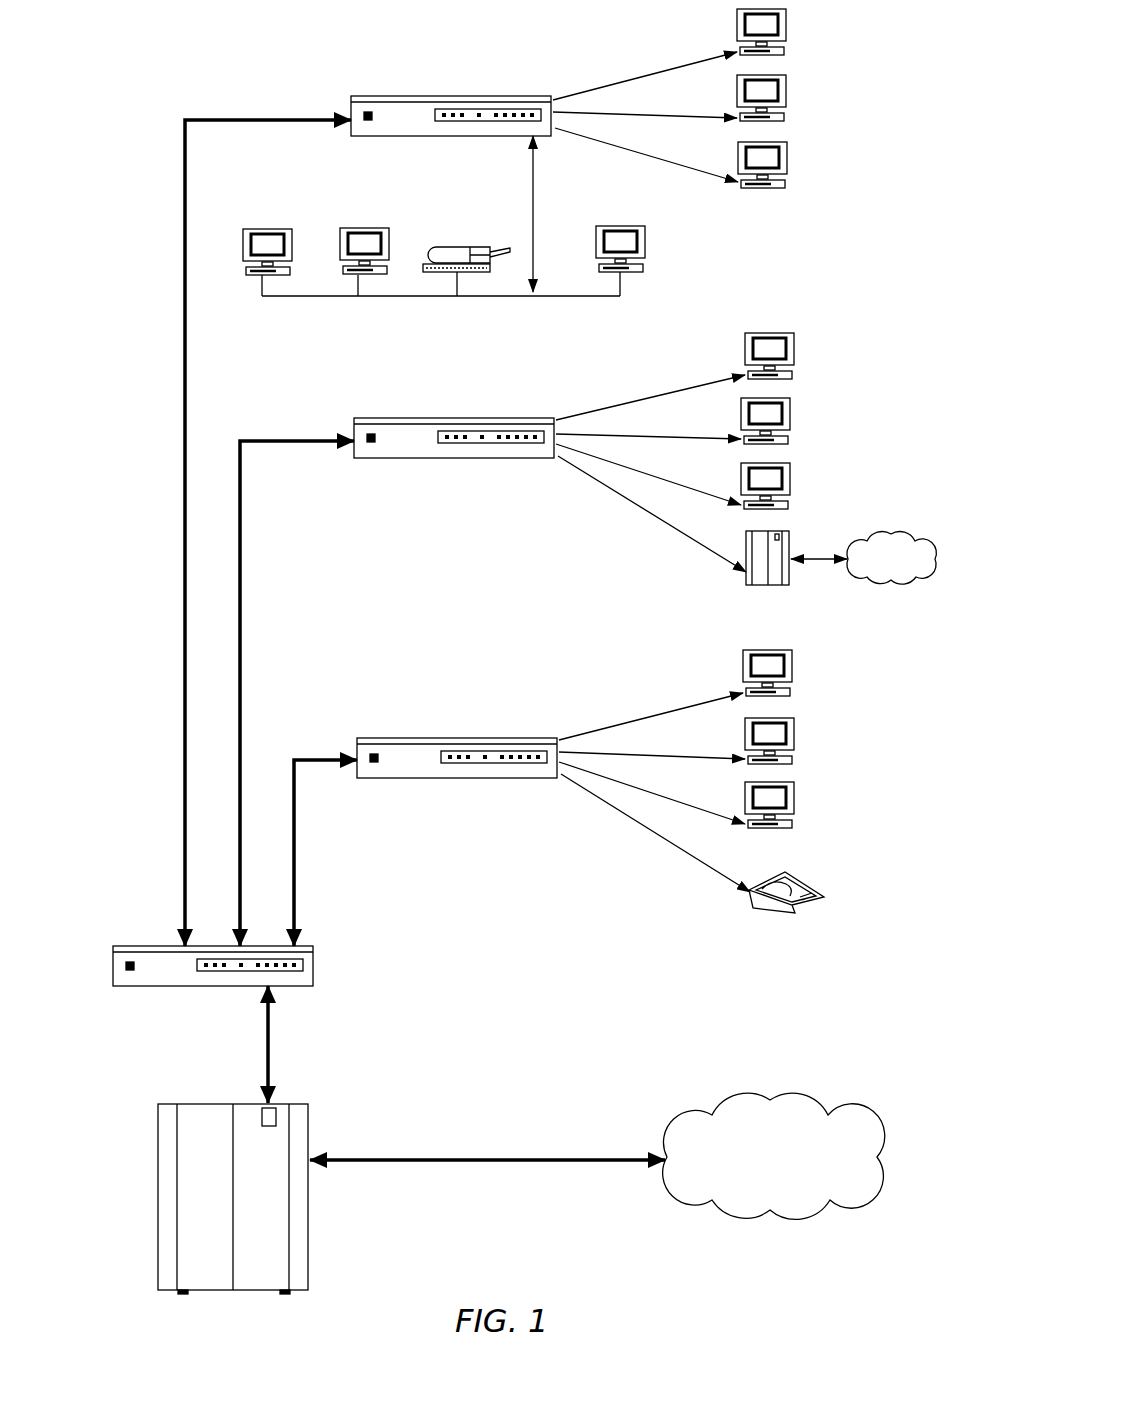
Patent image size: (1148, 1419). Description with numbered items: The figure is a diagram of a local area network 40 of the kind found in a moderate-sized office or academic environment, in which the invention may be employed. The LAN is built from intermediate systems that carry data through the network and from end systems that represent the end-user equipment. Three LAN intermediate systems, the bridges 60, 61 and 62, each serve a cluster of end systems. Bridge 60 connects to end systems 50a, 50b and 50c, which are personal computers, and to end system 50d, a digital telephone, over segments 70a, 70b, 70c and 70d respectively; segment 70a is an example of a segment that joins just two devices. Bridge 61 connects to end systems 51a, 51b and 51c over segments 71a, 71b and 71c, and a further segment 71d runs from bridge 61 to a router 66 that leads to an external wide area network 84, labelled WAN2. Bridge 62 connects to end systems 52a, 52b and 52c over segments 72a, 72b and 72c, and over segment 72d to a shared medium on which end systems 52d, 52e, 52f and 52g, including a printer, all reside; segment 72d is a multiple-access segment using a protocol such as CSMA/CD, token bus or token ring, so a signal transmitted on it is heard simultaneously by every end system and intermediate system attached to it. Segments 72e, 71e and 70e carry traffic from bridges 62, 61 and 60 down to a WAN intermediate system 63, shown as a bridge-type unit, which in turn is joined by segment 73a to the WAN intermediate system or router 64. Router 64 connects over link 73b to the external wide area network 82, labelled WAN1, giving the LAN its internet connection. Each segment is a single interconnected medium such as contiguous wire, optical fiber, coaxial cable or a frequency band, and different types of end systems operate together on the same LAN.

The local area network 40 is at (122, 503).
The end system 50a is at (796, 653).
The end system 50b is at (796, 742).
The end system 50c is at (797, 805).
The end system 50d is at (796, 879).
The end system 51a is at (796, 337).
The end system 51b is at (791, 407).
The end system 51c is at (792, 472).
The end system 52a is at (788, 27).
The end system 52b is at (788, 93).
The end system 52c is at (789, 160).
The end system 52d is at (645, 243).
The end system 52e is at (455, 250).
The end system 52f is at (364, 229).
The end system 52g is at (258, 229).
The LAN intermediate system 60 is at (458, 738).
The LAN intermediate system 61 is at (456, 418).
The LAN intermediate system 62 is at (453, 96).
The WAN intermediate system 63 is at (158, 946).
The WAN intermediate system 64 is at (158, 1157).
The router 66 is at (794, 545).
The segment 70a is at (668, 705).
The segment 70b is at (656, 756).
The segment 70c is at (664, 794).
The segment 70d is at (660, 839).
The segment 70e is at (298, 759).
The segment 71a is at (648, 388).
The segment 71b is at (641, 431).
The segment 71c is at (650, 472).
The segment 71d is at (645, 508).
The segment 71e is at (262, 440).
The segment 72a is at (637, 65).
The segment 72b is at (633, 111).
The segment 72c is at (648, 153).
The segment 72d is at (537, 188).
The segment 72e is at (262, 118).
The segment 73a is at (275, 1060).
The segment 73b is at (495, 1155).
The wide area network 82 is at (812, 1090).
The wide area network 84 is at (886, 532).